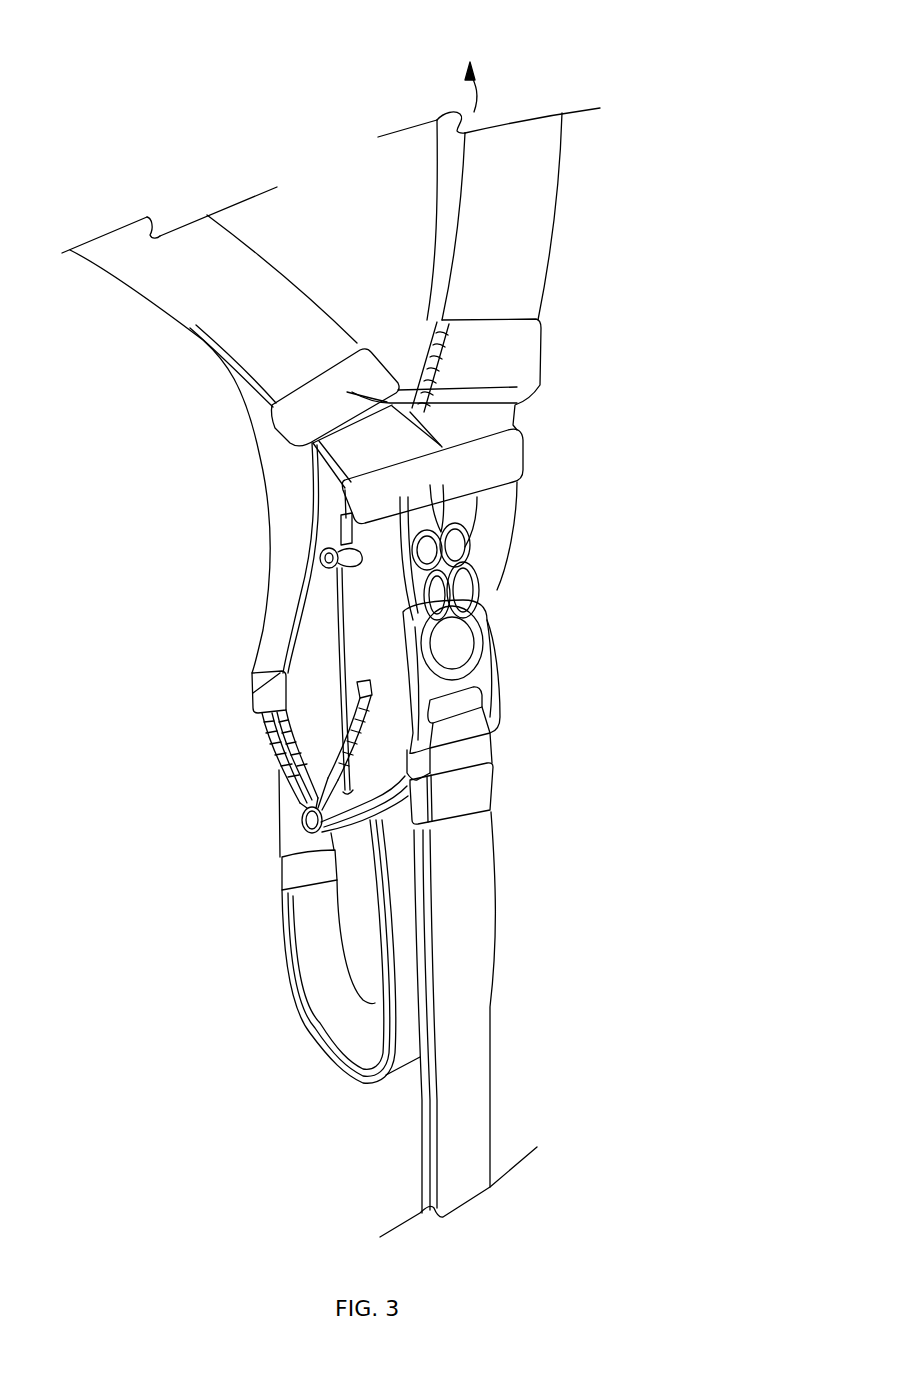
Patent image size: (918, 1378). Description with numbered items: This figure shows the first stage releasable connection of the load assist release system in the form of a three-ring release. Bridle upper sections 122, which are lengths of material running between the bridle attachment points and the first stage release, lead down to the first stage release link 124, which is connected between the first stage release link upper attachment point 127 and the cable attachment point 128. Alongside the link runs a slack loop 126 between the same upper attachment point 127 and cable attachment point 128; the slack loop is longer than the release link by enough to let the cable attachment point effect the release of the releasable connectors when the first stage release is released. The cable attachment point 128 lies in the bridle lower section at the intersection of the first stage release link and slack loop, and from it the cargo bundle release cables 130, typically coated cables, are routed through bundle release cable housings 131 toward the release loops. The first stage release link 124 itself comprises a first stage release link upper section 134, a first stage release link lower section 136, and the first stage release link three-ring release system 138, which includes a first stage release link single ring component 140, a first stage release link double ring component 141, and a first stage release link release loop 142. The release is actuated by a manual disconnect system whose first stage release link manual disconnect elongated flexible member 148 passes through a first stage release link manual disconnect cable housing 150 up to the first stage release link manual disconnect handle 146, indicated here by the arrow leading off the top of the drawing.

The first stage release link manual disconnect handle 146 is at (518, 59).
The bridle upper sections 122 is at (538, 262).
The first stage release link 124 is at (717, 403).
The slack loop 126 is at (322, 1049).
The first stage release link upper attachment point 127 is at (487, 367).
The cable attachment point 128 is at (470, 793).
The cargo bundle release cables 130 is at (278, 784).
The bundle release cable housings 131 is at (264, 731).
The first stage release link upper section 134 is at (633, 393).
The first stage release link lower section 136 is at (647, 680).
The first stage release link three-ring release system 138 is at (593, 507).
The first stage release link single ring component 140 is at (490, 657).
The first stage release link double ring component 141 is at (520, 530).
The first stage release link release loop 142 is at (447, 513).
The first stage release link manual disconnect elongated flexible member 148 is at (330, 597).
The first stage release link manual disconnect cable housing 150 is at (420, 400).